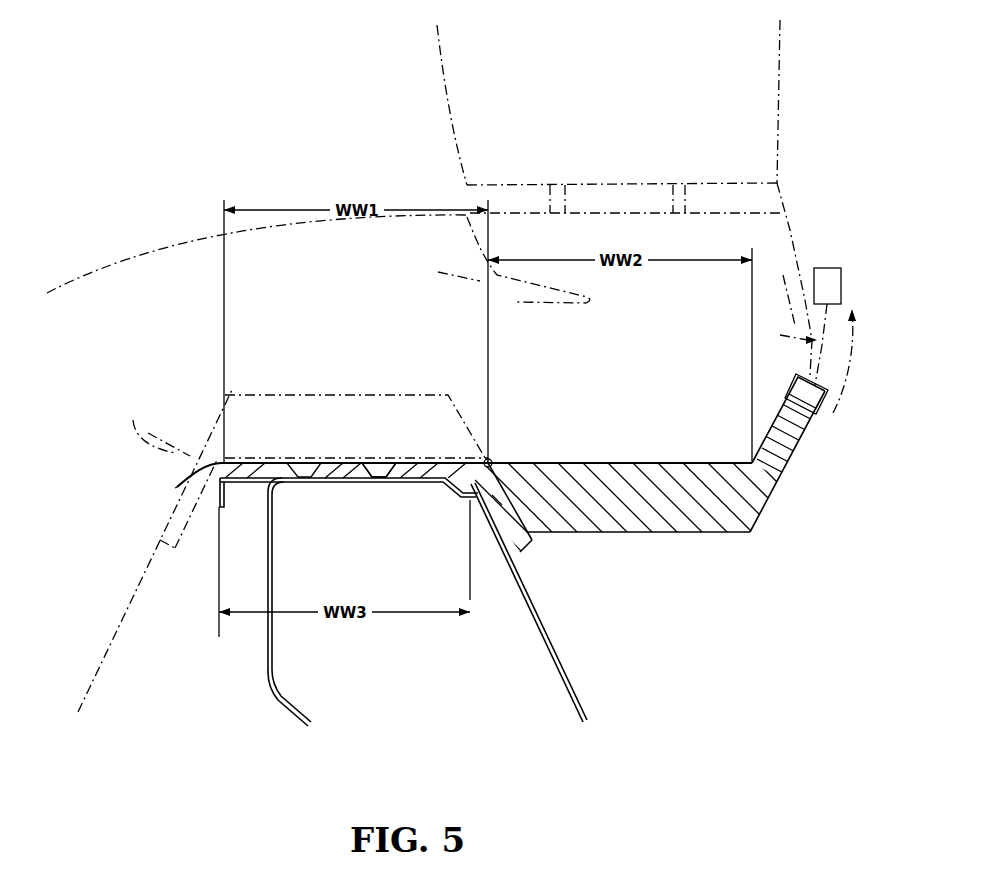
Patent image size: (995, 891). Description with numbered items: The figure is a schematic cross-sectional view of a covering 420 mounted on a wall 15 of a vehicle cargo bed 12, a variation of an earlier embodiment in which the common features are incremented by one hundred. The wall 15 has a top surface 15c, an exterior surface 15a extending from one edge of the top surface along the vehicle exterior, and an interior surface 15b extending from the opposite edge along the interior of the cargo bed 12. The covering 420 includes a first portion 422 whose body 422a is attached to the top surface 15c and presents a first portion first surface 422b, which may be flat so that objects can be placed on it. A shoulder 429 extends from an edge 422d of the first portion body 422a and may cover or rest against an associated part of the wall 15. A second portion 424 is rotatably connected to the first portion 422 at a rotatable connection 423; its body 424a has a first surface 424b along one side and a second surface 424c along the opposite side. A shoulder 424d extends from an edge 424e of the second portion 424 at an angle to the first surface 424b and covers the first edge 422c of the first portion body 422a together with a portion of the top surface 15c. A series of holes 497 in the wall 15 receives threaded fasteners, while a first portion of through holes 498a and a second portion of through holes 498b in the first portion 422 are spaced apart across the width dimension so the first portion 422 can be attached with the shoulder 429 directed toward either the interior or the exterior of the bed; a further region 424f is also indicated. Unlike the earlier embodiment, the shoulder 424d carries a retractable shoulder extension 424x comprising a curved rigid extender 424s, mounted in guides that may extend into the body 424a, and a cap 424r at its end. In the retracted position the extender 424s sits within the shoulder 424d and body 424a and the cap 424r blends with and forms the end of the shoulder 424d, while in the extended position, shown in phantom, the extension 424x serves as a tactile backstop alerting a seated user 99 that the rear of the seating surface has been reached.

The cargo bed 12 is at (155, 551).
The wall 15 is at (432, 602).
The exterior surface 15a is at (567, 662).
The interior surface 15b is at (265, 622).
The top surface 15c is at (265, 488).
The user 99 is at (455, 145).
The covering 420 is at (200, 406).
The first portion 422 is at (426, 438).
The first portion body 422a is at (343, 472).
The first portion first surface 422b is at (248, 455).
The first edge of the first portion body 422c is at (177, 487).
The edge of the first portion body 422d is at (488, 458).
The rotatable connection 423 is at (492, 462).
The second portion 424 is at (459, 410).
The second portion body 424a is at (408, 407).
The second portion first surface 424b is at (262, 455).
The second portion second surface 424c is at (250, 393).
The second portion shoulder 424d is at (200, 433).
The edge of the second portion 424e is at (172, 424).
The inner flange of sealing member 424f is at (474, 460).
The cap 424r is at (826, 268).
The extender 424s is at (783, 275).
The shoulder extension 424x is at (780, 335).
The shoulder 429 is at (497, 500).
The holes 497 is at (380, 483).
The first portion of the series of through holes 498a is at (307, 460).
The second portion of the series of through holes 498b is at (385, 460).